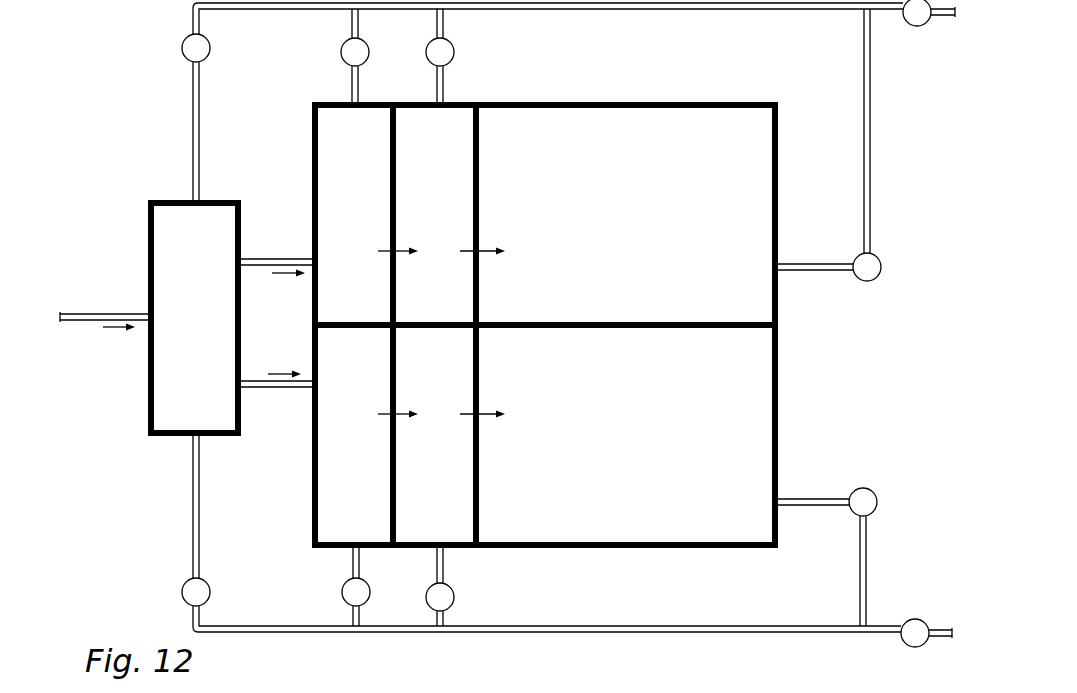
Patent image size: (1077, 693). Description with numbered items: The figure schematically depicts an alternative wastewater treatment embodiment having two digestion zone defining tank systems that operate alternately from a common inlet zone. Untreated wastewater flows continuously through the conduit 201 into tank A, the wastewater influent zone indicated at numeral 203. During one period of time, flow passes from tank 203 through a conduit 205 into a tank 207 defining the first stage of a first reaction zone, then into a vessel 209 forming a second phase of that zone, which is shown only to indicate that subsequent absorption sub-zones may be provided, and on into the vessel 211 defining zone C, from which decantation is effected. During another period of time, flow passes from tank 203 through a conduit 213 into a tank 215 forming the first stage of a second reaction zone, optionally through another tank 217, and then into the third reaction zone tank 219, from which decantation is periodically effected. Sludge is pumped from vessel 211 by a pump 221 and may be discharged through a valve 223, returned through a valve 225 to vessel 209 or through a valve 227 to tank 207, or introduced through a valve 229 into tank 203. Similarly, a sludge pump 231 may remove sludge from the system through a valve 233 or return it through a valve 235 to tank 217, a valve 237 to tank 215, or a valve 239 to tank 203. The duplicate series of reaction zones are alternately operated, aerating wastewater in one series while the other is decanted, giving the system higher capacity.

The conduit 201 is at (96, 312).
The tank A 203 is at (165, 232).
The conduit 205 is at (275, 258).
The tank 207 is at (333, 152).
The vessel 209 is at (455, 125).
The vessel 211 is at (660, 133).
The conduit 213 is at (272, 391).
The tank 215 is at (333, 500).
The tank 217 is at (455, 522).
The tank 219 is at (690, 530).
The pump 221 is at (870, 282).
The valve 223 is at (917, 27).
The valve 225 is at (454, 52).
The valve 227 is at (341, 54).
The valve 229 is at (182, 50).
The sludge pump 231 is at (866, 488).
The valve 233 is at (895, 645).
The valve 235 is at (454, 598).
The valve 237 is at (342, 593).
The valve 239 is at (182, 590).